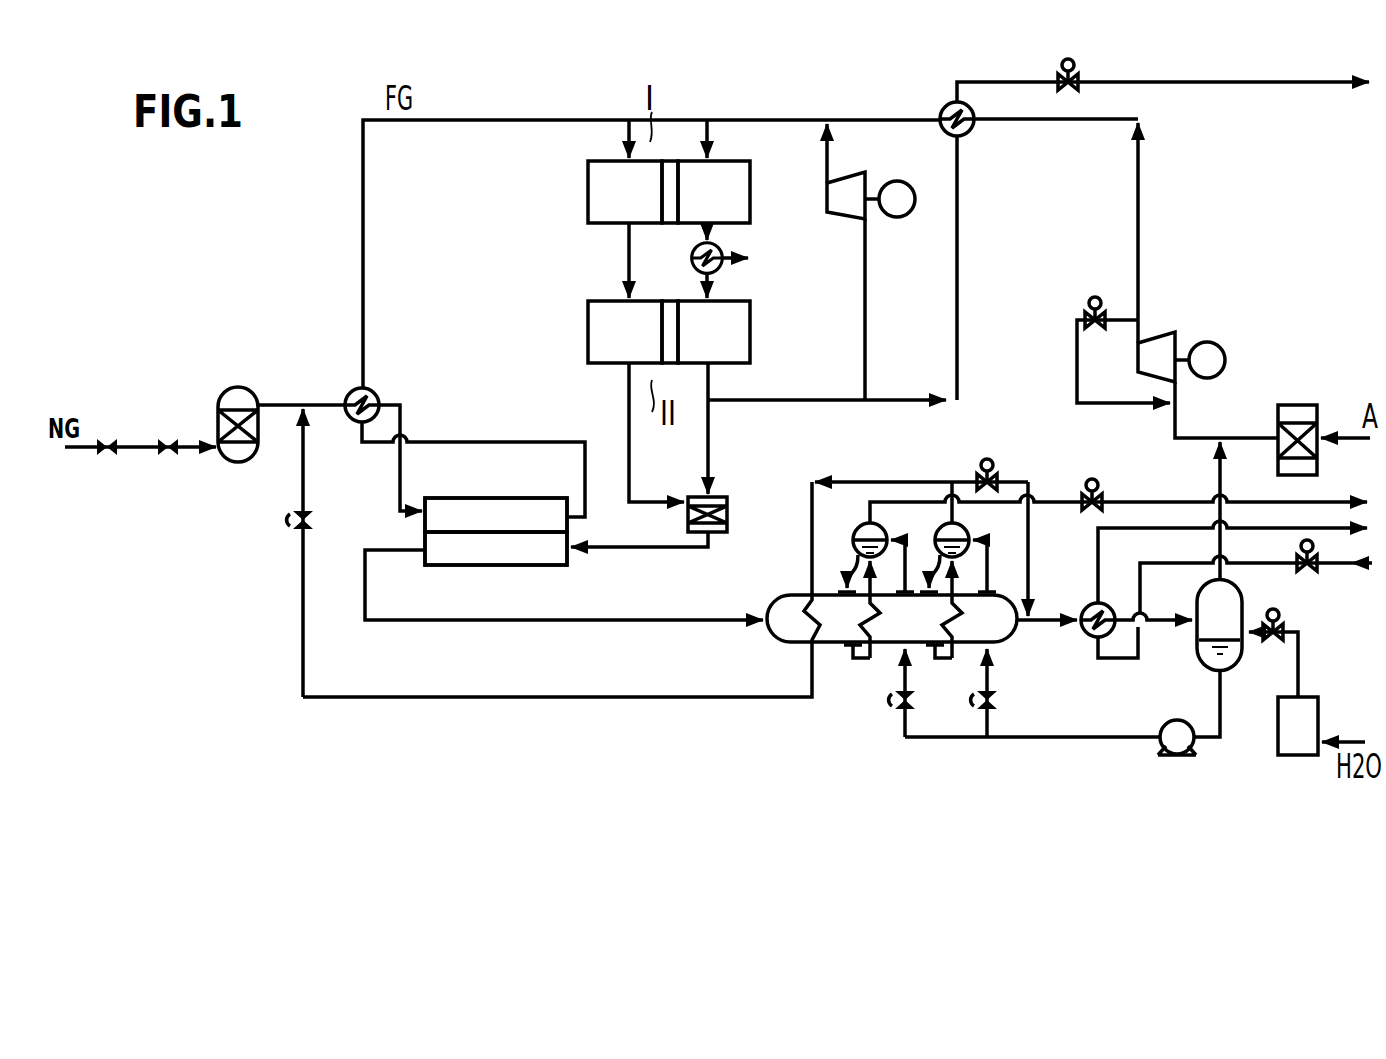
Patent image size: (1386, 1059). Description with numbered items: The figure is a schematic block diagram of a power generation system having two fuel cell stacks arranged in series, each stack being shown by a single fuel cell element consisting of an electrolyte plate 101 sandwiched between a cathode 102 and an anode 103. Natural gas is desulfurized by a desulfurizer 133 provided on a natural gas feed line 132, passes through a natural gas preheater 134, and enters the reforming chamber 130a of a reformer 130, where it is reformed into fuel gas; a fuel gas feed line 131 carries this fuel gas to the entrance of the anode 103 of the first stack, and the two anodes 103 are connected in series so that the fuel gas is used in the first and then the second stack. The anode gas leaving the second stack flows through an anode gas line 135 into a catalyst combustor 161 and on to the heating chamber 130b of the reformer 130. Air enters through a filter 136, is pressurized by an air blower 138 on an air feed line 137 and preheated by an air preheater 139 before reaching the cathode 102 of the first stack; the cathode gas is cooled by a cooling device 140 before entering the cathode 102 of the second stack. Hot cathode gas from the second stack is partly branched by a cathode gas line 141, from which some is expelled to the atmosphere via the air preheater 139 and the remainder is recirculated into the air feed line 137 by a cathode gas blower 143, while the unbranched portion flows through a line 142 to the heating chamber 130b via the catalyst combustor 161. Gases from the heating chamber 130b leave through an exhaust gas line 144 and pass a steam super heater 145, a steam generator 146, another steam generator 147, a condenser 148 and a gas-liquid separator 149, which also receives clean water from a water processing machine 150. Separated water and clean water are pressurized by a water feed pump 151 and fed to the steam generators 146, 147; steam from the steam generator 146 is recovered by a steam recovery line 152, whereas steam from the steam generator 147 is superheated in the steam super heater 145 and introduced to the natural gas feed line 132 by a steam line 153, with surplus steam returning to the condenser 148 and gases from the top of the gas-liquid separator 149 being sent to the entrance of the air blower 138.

The electrolyte plate 101 is at (667, 160).
The cathode 102 is at (718, 211).
The anode 103 is at (630, 211).
The reformer 130 is at (418, 531).
The reforming chamber 130a is at (534, 498).
The heating chamber 130b is at (473, 560).
The fuel gas feed line 131 is at (363, 238).
The natural gas feed line 132 is at (140, 447).
The desulfurizer 133 is at (228, 390).
The natural gas preheater 134 is at (376, 390).
The anode gas line 135 is at (632, 478).
The filter 136 is at (1298, 405).
The air feed line 137 is at (1138, 283).
The air blower 138 is at (1168, 352).
The air preheater 139 is at (969, 133).
The cooling device 140 is at (722, 268).
The cathode gas line 141 is at (826, 376).
The line 142 is at (710, 465).
The cathode gas blower 143 is at (878, 216).
The exhaust gas line 144 is at (520, 622).
The steam super heater 145 is at (790, 628).
The steam generator 146 is at (852, 622).
The steam generator 147 is at (990, 640).
The condenser 148 is at (1086, 608).
The gas-liquid separator 149 is at (1190, 637).
The water processing machine 150 is at (1318, 720).
The water feed pump 151 is at (1160, 745).
The steam recovery line 152 is at (1140, 501).
The steam line 153 is at (303, 672).
The catalyst combustor 161 is at (728, 530).